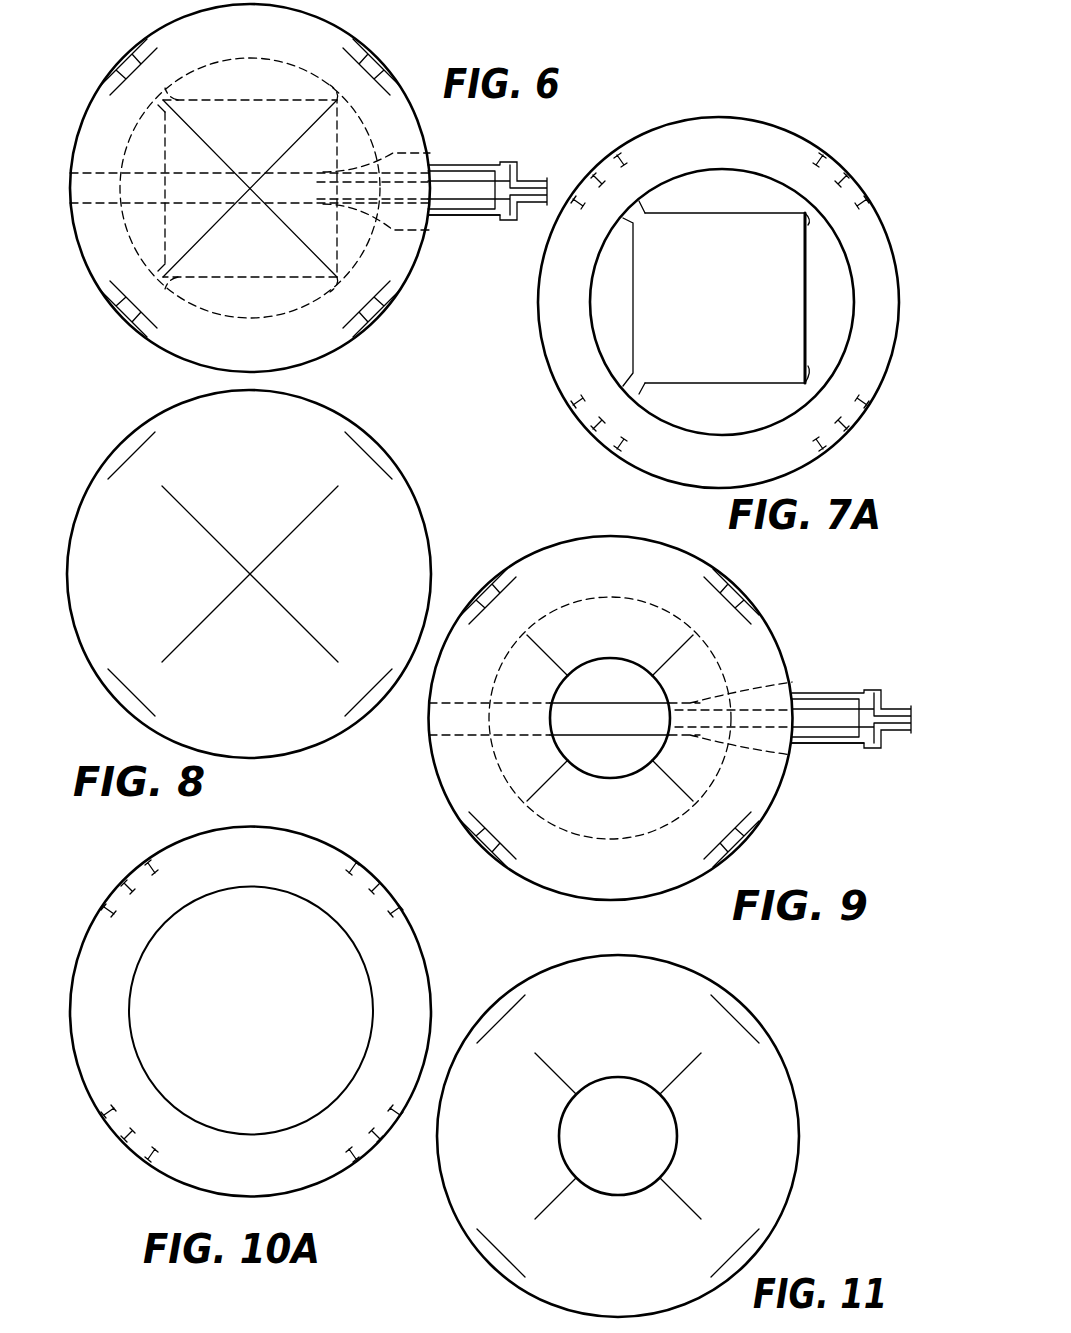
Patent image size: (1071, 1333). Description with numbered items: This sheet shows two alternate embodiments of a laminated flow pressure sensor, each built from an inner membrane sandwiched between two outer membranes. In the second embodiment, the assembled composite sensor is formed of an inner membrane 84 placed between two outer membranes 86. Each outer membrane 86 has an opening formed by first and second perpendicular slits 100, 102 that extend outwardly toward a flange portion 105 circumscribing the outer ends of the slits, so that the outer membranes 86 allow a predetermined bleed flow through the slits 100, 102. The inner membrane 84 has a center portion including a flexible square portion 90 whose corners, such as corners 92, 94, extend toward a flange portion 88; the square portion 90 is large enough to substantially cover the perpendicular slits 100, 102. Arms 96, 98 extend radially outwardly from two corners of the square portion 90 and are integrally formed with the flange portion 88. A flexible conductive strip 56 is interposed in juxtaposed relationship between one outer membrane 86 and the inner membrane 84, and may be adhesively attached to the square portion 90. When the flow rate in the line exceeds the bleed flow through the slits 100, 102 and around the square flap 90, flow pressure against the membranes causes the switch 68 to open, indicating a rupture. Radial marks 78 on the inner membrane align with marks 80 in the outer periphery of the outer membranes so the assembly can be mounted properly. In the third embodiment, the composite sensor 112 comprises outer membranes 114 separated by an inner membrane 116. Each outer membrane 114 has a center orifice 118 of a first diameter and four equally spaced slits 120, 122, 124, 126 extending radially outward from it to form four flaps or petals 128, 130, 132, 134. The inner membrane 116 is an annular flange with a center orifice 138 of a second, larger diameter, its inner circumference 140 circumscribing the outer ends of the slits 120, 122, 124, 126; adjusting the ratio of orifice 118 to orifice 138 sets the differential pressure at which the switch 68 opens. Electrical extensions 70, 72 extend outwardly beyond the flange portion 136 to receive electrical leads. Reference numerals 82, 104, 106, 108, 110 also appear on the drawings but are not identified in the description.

In FIG. 6, the flexible conductive strip 56 is at (112, 165).
In FIG. 9, the flexible conductive strip 56 is at (461, 698).
In FIG. 6, the switch 68 is at (328, 162).
In FIG. 9, the switch 68 is at (688, 745).
In FIG. 6, the electrical extension 70 is at (462, 165).
In FIG. 9, the electrical extension 70 is at (829, 695).
In FIG. 6, the electrical extension 72 is at (453, 218).
In FIG. 9, the electrical extension 72 is at (819, 742).
In FIG. 6, the radial marks 78 is at (392, 62).
In FIG. 7A, the radial marks 78 is at (604, 150).
In FIG. 9, the radial marks 78 is at (478, 600).
In FIG. 10A, the radial marks 78 is at (103, 910).
In FIG. 6, the marks 80 is at (360, 50).
In FIG. 8, the marks 80 is at (131, 466).
In FIG. 9, the marks 80 is at (496, 814).
In FIG. 11, the marks 80 is at (510, 1012).
In FIG. 6, the first assembly 82 is at (72, 65).
In FIG. 6, the inner membrane 84 is at (248, 310).
In FIG. 7A, the inner membrane 84 is at (818, 134).
In FIG. 8, the outer membranes 86 is at (391, 446).
In FIG. 6, the flange portion 88 is at (178, 32).
In FIG. 7A, the flange portion 88 is at (735, 135).
In FIG. 7A, the flexible square portion 90 is at (711, 302).
In FIG. 6, the corner 92 is at (337, 97).
In FIG. 7A, the corner 92 is at (808, 220).
In FIG. 6, the corner 94 is at (337, 282).
In FIG. 7A, the corner 94 is at (812, 380).
In FIG. 6, the arm 96 is at (195, 90).
In FIG. 7A, the arm 96 is at (648, 208).
In FIG. 6, the arm 98 is at (192, 292).
In FIG. 7A, the arm 98 is at (648, 394).
In FIG. 6, the first slit 100 is at (193, 128).
In FIG. 8, the first slit 100 is at (191, 513).
In FIG. 6, the second slit 102 is at (293, 138).
In FIG. 8, the second slit 102 is at (301, 525).
In FIG. 6, the upper quadrant 104 is at (239, 155).
In FIG. 8, the upper quadrant 104 is at (237, 533).
In FIG. 6, the flange portion 105 is at (103, 263).
In FIG. 8, the flange portion 105 is at (182, 428).
In FIG. 6, the right quadrant 106 is at (274, 197).
In FIG. 8, the right quadrant 106 is at (299, 585).
In FIG. 6, the lower quadrant 108 is at (235, 240).
In FIG. 8, the lower quadrant 108 is at (228, 644).
In FIG. 6, the left quadrant 110 is at (179, 197).
In FIG. 8, the left quadrant 110 is at (161, 585).
In FIG. 9, the composite sensor 112 is at (779, 576).
In FIG. 9, the outer membranes 114 is at (589, 760).
In FIG. 11, the outer membranes 114 is at (737, 983).
In FIG. 9, the inner membrane 116 is at (507, 658).
In FIG. 10A, the inner membrane 116 is at (299, 826).
In FIG. 11, the center orifice 118 is at (600, 1135).
In FIG. 9, the slit 120 is at (552, 653).
In FIG. 11, the slit 120 is at (545, 1063).
In FIG. 9, the slit 122 is at (681, 649).
In FIG. 11, the slit 122 is at (683, 1063).
In FIG. 9, the slit 124 is at (676, 786).
In FIG. 11, the slit 124 is at (680, 1197).
In FIG. 9, the slit 126 is at (549, 783).
In FIG. 11, the slit 126 is at (555, 1197).
In FIG. 11, the flap or petal 128 is at (600, 1059).
In FIG. 11, the flap or petal 130 is at (690, 1135).
In FIG. 11, the flap or petal 132 is at (600, 1235).
In FIG. 11, the flap or petal 134 is at (507, 1135).
In FIG. 9, the flange portion 136 is at (626, 557).
In FIG. 10A, the flange portion 136 is at (388, 963).
In FIG. 10A, the center orifice 138 is at (234, 1011).
In FIG. 9, the inner circumference 140 is at (597, 603).
In FIG. 10A, the inner circumference 140 is at (365, 960).